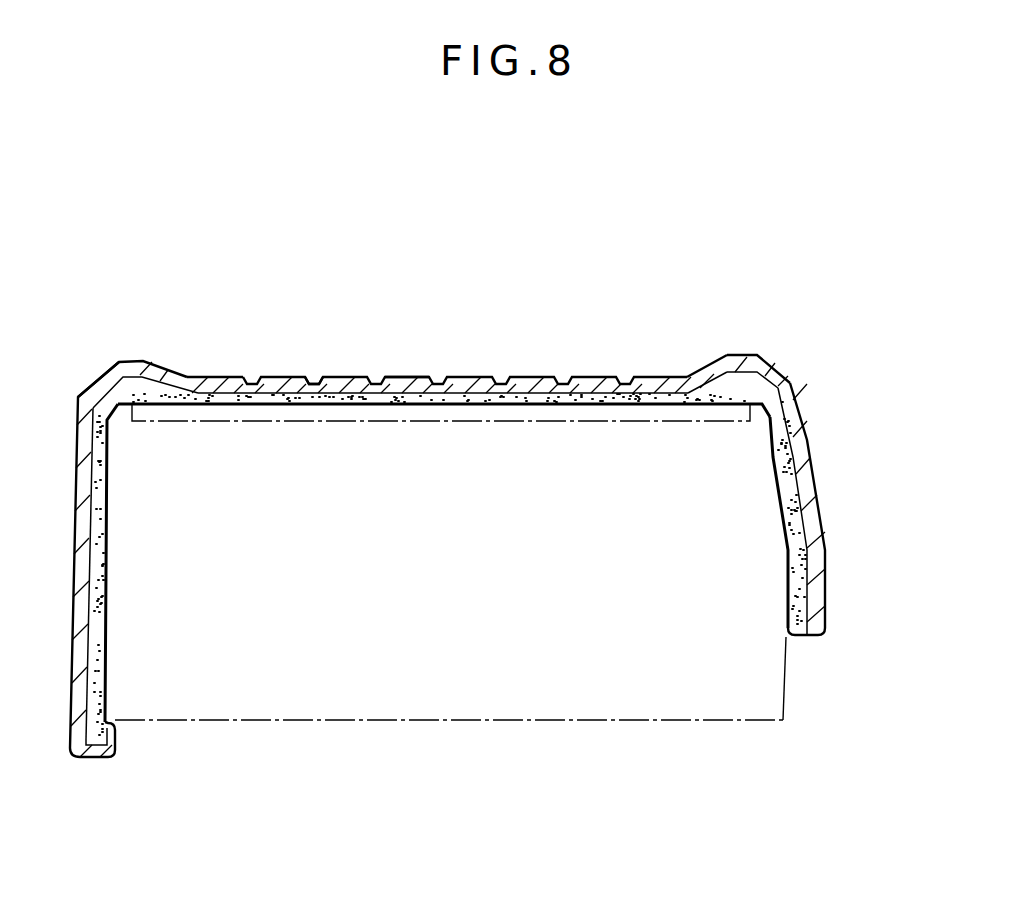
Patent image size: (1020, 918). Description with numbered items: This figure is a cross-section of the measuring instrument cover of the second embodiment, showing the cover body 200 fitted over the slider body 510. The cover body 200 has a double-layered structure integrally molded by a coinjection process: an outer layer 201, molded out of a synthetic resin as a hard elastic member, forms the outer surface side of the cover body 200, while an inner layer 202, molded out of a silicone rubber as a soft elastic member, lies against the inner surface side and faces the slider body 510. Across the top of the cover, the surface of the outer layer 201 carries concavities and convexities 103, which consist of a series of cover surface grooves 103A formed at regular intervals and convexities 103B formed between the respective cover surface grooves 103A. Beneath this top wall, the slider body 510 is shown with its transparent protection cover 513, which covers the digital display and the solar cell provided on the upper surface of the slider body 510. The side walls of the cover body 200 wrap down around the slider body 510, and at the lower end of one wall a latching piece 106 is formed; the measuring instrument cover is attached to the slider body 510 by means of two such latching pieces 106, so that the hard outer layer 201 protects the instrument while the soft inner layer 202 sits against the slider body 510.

The cover body 200 is at (887, 505).
The latching piece 106 is at (110, 760).
The concavities and convexities 103 is at (428, 296).
The cover surface grooves 103A is at (314, 378).
The convexities 103B is at (405, 376).
The transparent protection cover 513 is at (470, 405).
The outer layer 201 is at (797, 390).
The inner layer 202 is at (785, 435).
The slider body 510 is at (637, 722).